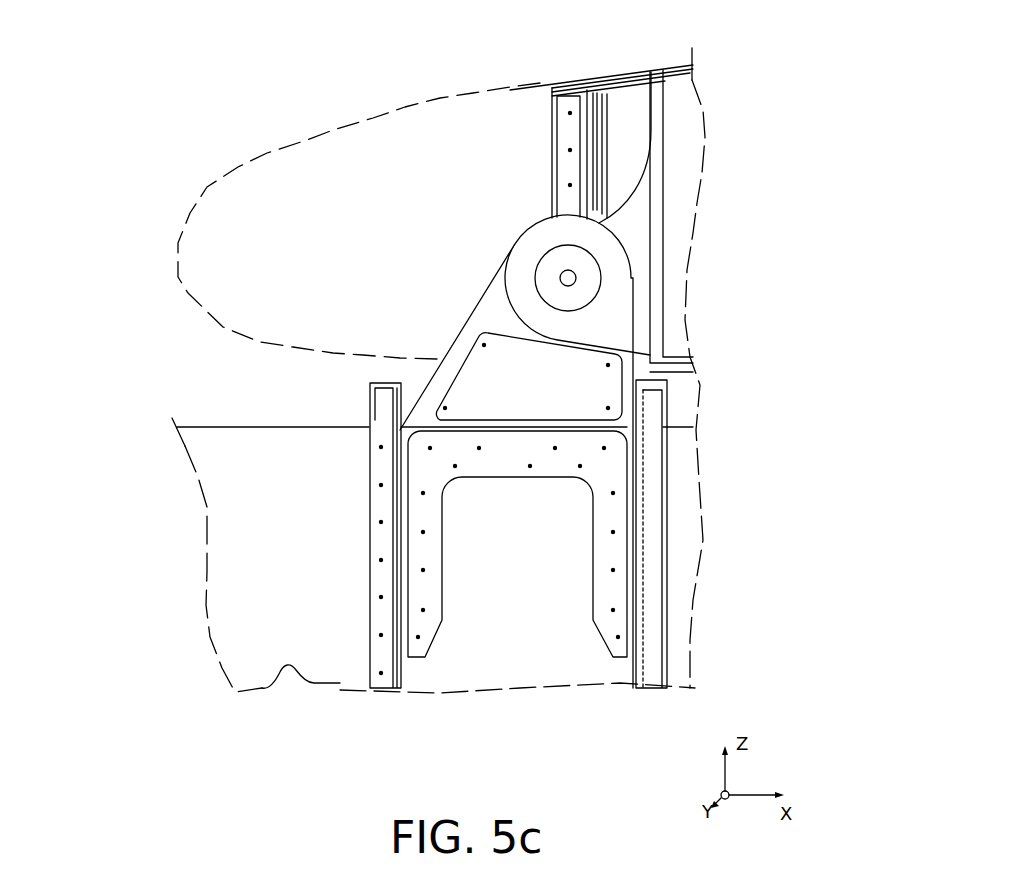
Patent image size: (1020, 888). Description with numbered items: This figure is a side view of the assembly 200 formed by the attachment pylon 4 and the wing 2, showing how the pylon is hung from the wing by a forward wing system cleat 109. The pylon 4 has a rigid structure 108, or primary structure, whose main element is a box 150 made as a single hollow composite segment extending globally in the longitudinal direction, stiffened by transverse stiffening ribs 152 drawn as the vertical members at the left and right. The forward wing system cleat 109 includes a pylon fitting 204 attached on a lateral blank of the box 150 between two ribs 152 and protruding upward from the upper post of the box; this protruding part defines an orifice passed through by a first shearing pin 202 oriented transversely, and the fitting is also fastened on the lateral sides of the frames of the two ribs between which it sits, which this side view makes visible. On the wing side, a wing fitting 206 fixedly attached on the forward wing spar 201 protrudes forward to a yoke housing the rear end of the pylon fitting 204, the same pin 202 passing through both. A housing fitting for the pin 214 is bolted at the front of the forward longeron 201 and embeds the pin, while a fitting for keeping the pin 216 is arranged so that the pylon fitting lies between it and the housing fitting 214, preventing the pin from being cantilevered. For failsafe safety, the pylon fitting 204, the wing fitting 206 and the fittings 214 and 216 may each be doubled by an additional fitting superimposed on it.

The wing 2 is at (360, 152).
The attachment pylon 4 is at (150, 407).
The rigid structure 108 is at (157, 575).
The forward wing system cleat 109 is at (724, 201).
The box 150 is at (273, 690).
The transverse stiffening ribs 152 is at (383, 690).
The assembly 200 is at (772, 249).
The forward wing spar 201 is at (583, 80).
The first shearing pin 202 is at (590, 281).
The pylon fitting 204 is at (618, 517).
The wing fitting 206 is at (656, 178).
The housing fitting for the pin 214 is at (632, 118).
The fitting for keeping the pin 216 is at (550, 112).